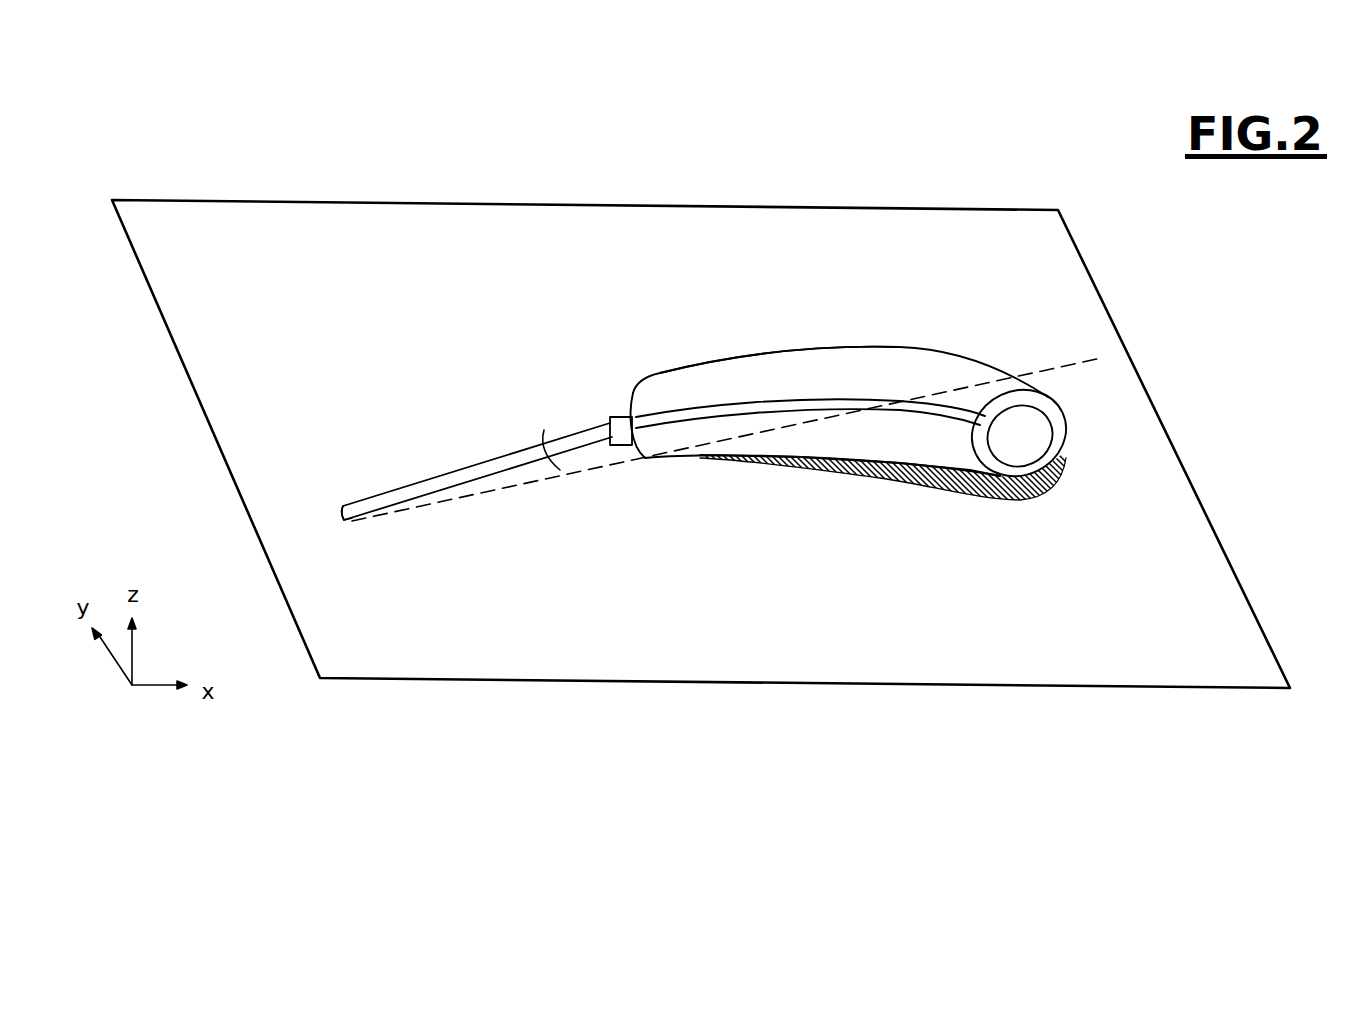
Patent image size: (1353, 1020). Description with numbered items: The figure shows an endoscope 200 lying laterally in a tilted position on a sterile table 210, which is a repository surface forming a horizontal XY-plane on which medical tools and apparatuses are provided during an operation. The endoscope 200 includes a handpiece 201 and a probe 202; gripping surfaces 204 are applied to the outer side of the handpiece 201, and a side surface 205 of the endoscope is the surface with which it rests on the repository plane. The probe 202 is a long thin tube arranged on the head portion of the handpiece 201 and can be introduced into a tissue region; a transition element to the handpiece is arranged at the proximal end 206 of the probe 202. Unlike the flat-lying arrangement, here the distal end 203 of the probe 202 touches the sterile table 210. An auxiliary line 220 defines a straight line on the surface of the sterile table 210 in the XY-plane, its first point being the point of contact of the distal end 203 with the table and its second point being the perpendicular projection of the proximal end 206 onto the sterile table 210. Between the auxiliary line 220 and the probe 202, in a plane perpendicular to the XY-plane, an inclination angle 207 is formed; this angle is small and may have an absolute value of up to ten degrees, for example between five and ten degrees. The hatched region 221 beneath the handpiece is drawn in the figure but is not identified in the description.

The endoscope 200 is at (886, 308).
The handpiece 201 is at (707, 368).
The probe 202 is at (430, 482).
The distal end of the probe 203 is at (340, 517).
The gripping surfaces 204 is at (797, 367).
The side surface 205 is at (912, 492).
The proximal end of the probe 206 is at (620, 413).
The inclination angle 207 is at (568, 488).
The sterile table 210 is at (196, 198).
The auxiliary line 220 is at (1045, 368).
The contact region 221 is at (993, 497).